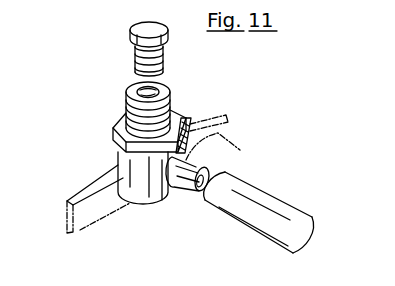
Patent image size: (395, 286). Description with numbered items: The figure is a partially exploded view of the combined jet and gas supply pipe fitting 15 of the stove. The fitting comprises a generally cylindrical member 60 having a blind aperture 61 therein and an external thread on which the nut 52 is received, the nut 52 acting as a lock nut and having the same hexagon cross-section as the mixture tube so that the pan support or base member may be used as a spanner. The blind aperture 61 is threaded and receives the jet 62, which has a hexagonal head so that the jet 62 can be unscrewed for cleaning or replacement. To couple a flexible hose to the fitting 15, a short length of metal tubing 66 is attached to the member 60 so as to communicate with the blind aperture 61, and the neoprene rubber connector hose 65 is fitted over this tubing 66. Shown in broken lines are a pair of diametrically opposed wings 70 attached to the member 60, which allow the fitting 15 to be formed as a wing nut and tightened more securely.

The combined jet and gas supply pipe fitting 15 is at (210, 98).
The nut 52 is at (195, 117).
The generally cylindrical member 60 is at (152, 198).
The blind aperture 61 is at (164, 90).
The jet 62 is at (138, 31).
The connector hose 65 is at (289, 212).
The metal tubing 66 is at (198, 193).
The wings 70 is at (80, 207).